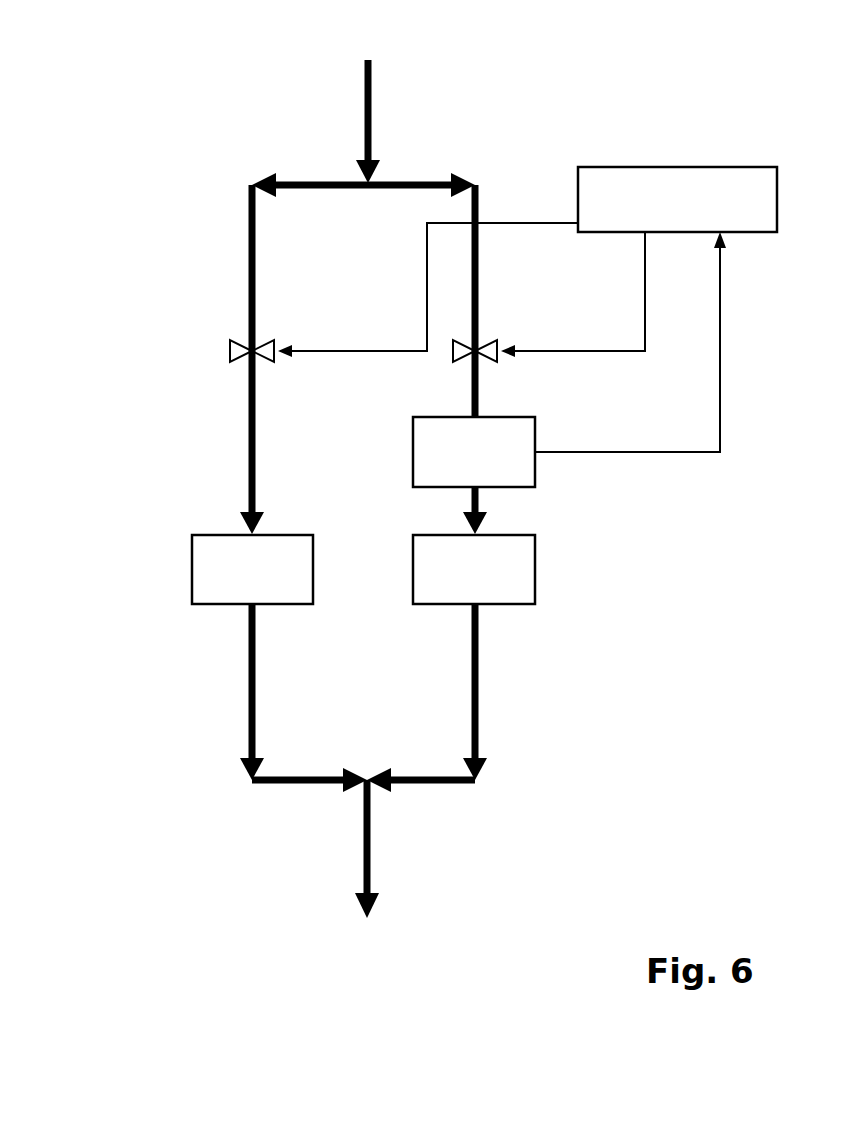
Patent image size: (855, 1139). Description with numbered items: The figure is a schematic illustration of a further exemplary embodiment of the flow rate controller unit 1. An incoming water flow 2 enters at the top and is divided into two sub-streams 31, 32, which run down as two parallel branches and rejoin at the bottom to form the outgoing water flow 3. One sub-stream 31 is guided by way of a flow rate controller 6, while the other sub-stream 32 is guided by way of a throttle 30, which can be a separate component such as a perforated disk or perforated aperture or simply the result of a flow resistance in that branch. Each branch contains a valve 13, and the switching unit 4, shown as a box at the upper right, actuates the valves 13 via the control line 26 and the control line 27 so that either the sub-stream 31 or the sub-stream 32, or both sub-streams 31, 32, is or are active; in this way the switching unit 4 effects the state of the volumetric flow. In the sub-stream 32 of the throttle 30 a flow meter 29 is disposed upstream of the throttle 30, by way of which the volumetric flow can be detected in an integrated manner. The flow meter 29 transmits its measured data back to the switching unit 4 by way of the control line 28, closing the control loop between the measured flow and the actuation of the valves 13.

The flow rate controller unit 1 is at (122, 128).
The incoming water flow 2 is at (365, 133).
The outgoing water flow 3 is at (360, 876).
The switching unit 4 is at (677, 157).
The flow rate controller 6 is at (202, 580).
The valve 13 is at (228, 352).
The control line 26 is at (505, 222).
The control line 27 is at (585, 350).
The control line 28 is at (665, 453).
The flow meter 29 is at (525, 470).
The throttle 30 is at (518, 582).
The sub-stream 31 is at (310, 182).
The sub-stream 32 is at (421, 183).